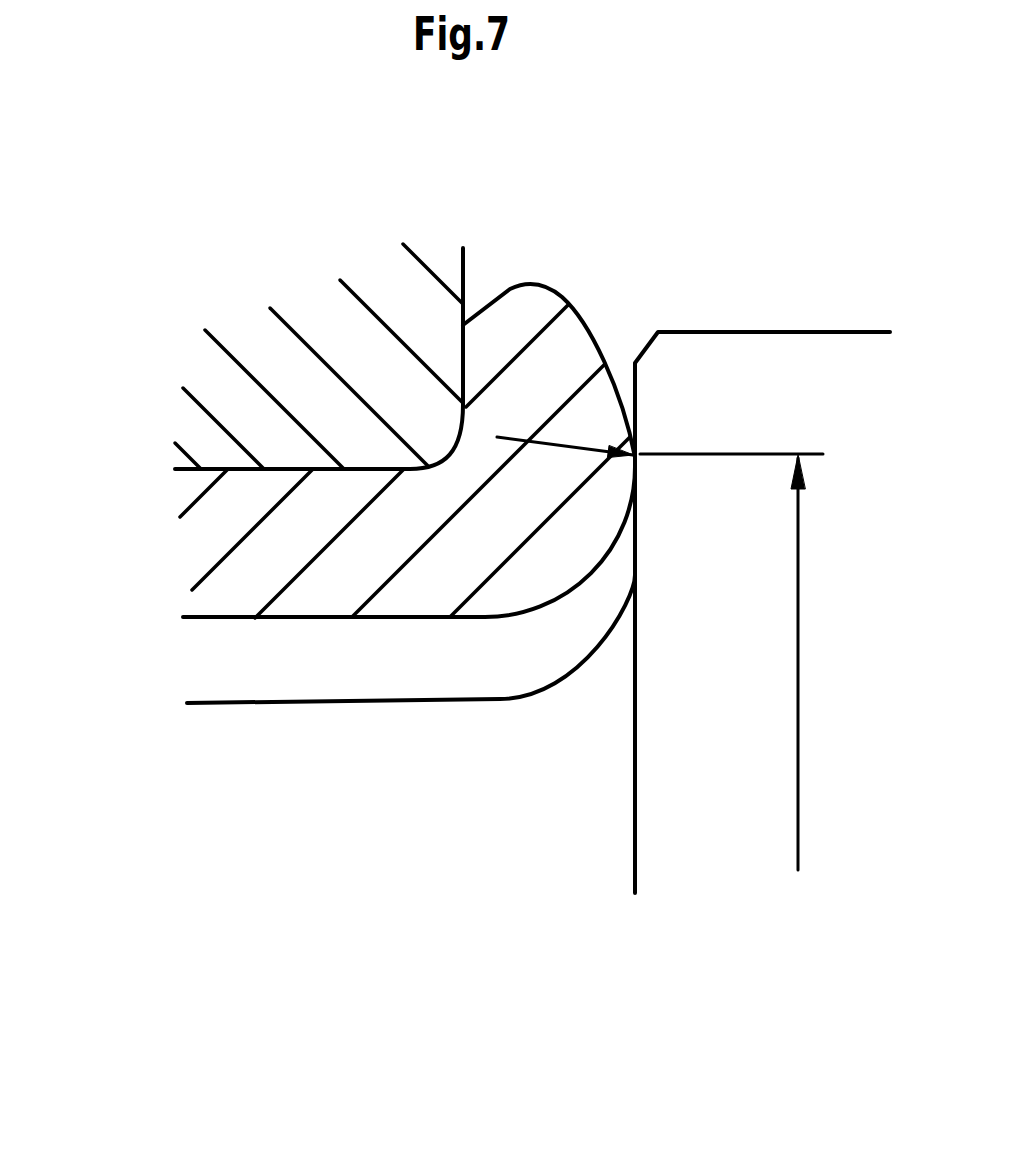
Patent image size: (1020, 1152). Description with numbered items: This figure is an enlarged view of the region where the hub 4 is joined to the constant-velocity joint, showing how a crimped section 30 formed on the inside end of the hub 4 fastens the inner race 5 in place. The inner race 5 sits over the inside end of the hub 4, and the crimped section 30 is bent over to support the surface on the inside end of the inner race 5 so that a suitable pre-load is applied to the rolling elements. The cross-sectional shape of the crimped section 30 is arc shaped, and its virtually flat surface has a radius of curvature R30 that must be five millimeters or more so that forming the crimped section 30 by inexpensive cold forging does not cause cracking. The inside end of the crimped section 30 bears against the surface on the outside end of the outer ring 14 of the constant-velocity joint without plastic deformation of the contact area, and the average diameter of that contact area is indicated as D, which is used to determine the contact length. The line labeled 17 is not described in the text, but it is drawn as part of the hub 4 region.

The hub 4 is at (250, 568).
The inner race 5 is at (237, 395).
The outer ring of the constant-velocity joint 14 is at (752, 353).
The seal lip 17 is at (230, 747).
The crimped section 30 is at (522, 300).
The radius of curvature R30 is at (572, 443).
The average diameter of the contact area D is at (798, 711).